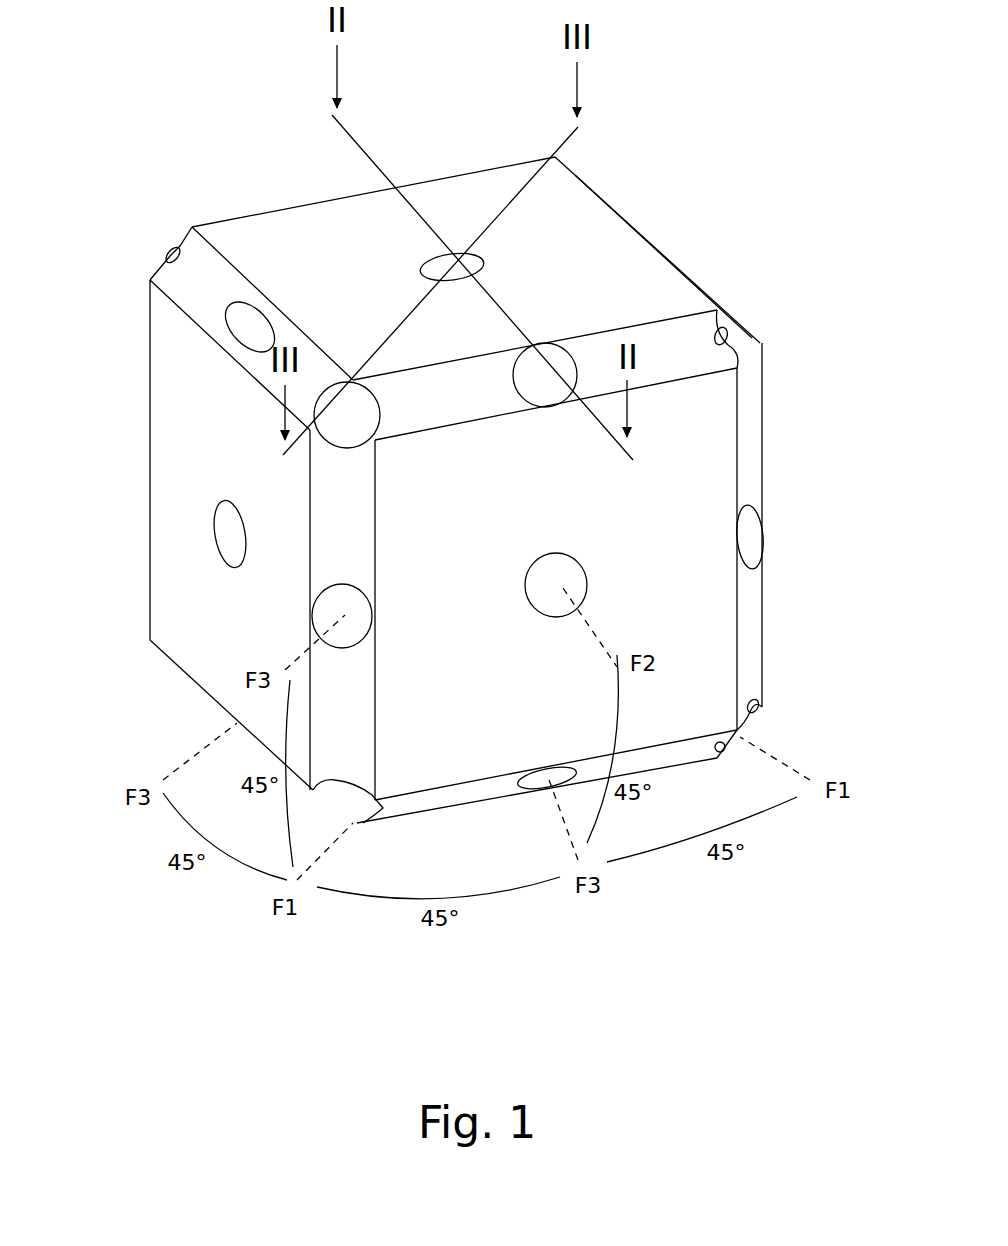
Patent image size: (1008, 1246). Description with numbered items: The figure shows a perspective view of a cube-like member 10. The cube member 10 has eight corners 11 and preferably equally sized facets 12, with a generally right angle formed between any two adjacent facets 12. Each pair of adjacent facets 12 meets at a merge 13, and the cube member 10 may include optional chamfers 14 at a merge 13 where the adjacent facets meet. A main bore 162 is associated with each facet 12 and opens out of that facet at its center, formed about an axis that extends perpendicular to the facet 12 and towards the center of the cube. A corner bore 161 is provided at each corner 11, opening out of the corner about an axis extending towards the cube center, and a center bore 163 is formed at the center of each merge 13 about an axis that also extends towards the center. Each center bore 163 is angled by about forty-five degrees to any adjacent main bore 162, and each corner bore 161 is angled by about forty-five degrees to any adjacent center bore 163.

The cube-like member 10 is at (684, 157).
The corner 11 is at (152, 242).
The facet 12 is at (497, 210).
The merge 13 is at (197, 281).
The chamfer 14 is at (200, 317).
The corner bore 161 is at (360, 813).
The main bore 162 is at (440, 257).
The center bore 163 is at (535, 787).